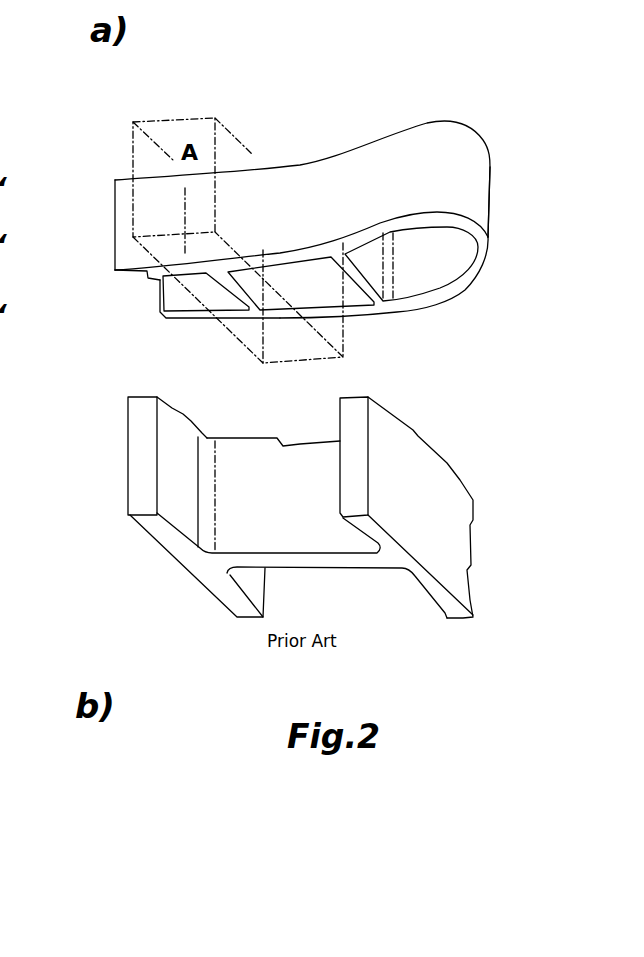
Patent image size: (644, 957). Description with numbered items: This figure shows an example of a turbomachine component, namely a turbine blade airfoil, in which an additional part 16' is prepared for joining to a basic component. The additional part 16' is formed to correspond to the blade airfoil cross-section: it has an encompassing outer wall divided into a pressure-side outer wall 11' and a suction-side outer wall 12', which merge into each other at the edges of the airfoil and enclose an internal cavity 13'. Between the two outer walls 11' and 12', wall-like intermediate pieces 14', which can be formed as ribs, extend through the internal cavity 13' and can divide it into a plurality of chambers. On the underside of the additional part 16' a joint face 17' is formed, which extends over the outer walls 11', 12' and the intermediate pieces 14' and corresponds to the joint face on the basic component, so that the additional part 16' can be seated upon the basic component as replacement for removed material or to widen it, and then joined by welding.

The pressure-side outer wall 11' is at (112, 330).
The suction-side outer wall 12' is at (465, 384).
The internal cavity 13' is at (423, 272).
The wall-like intermediate pieces 14' is at (363, 406).
The additional part 16' is at (302, 180).
The joint face 17' is at (243, 426).